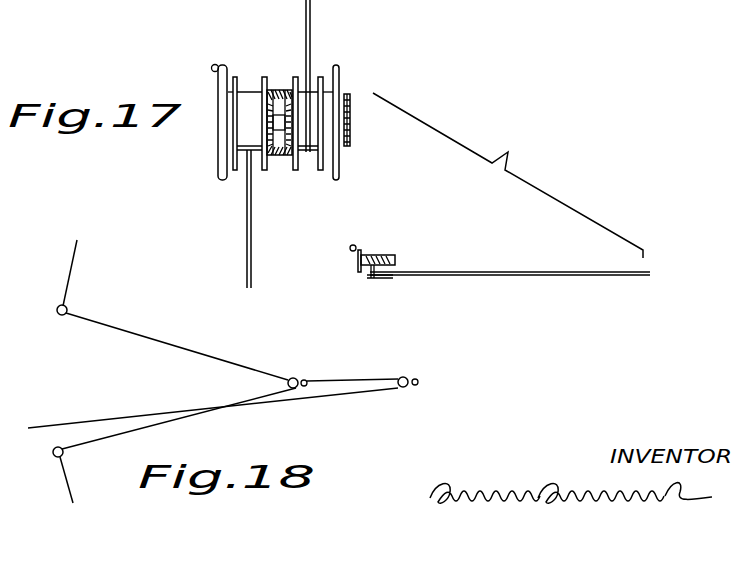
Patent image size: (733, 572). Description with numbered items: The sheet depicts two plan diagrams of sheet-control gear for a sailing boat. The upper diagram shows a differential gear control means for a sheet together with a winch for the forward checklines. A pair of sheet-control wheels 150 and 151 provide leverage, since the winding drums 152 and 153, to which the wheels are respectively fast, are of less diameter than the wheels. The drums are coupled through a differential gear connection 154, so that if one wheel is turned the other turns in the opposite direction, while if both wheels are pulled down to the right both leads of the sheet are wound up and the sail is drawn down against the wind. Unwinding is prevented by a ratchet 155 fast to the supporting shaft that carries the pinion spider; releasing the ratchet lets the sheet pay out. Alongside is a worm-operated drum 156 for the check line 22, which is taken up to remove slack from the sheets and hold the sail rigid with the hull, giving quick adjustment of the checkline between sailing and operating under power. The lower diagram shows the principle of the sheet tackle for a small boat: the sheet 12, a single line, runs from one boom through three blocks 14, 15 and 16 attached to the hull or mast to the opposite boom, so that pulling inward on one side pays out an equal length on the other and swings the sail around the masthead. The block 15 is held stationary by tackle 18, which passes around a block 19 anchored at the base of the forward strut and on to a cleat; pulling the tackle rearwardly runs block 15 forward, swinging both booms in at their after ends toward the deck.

In FIG. 17, the sheet 12 is at (303, 4).
In FIG. 18, the sheet 12 is at (79, 255).
In FIG. 18, the block 14 is at (65, 453).
In FIG. 18, the block 15 is at (318, 357).
In FIG. 18, the block 16 is at (69, 307).
In FIG. 18, the tackle 18 is at (336, 380).
In FIG. 18, the block 19 is at (404, 390).
In FIG. 17, the check line 22 is at (523, 270).
In FIG. 17, the sheet-control wheel 150 is at (220, 180).
In FIG. 17, the sheet-control wheel 151 is at (337, 175).
In FIG. 17, the winding drum 152 is at (251, 91).
In FIG. 17, the winding drum 153 is at (313, 151).
In FIG. 17, the differential gear connection 154 is at (279, 92).
In FIG. 17, the ratchet 155 is at (349, 95).
In FIG. 17, the worm-operated drum 156 is at (399, 266).